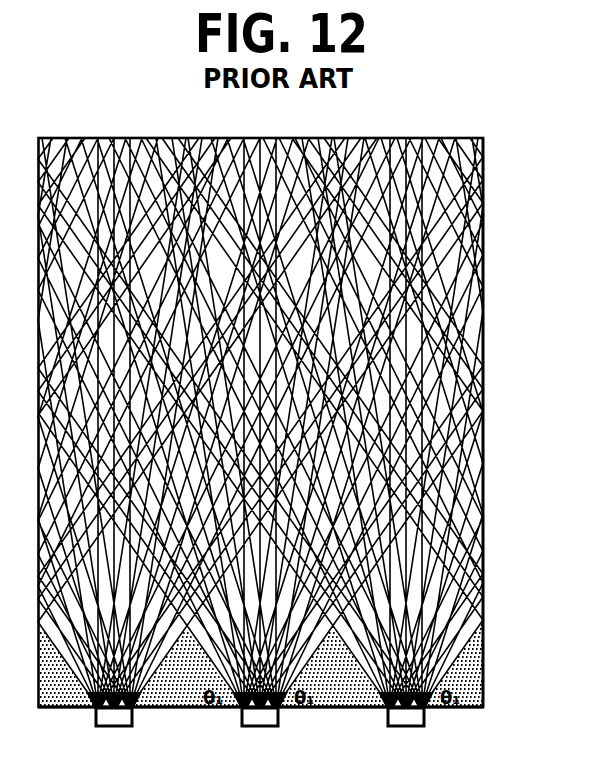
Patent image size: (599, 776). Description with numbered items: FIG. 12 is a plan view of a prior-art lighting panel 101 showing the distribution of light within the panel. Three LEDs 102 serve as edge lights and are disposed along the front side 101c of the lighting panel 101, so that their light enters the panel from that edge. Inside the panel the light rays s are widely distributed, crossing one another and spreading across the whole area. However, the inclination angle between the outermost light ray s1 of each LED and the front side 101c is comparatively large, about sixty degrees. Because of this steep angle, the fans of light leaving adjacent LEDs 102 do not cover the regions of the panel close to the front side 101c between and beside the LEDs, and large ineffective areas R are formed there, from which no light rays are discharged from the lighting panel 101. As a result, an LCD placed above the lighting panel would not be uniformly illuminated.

The lighting panel 101 is at (237, 137).
The front side of the lighting panel 101c is at (357, 708).
The LEDs 102 is at (260, 727).
The ineffective areas R is at (57, 672).
The light rays s is at (483, 547).
The outermost light ray s1 is at (478, 643).